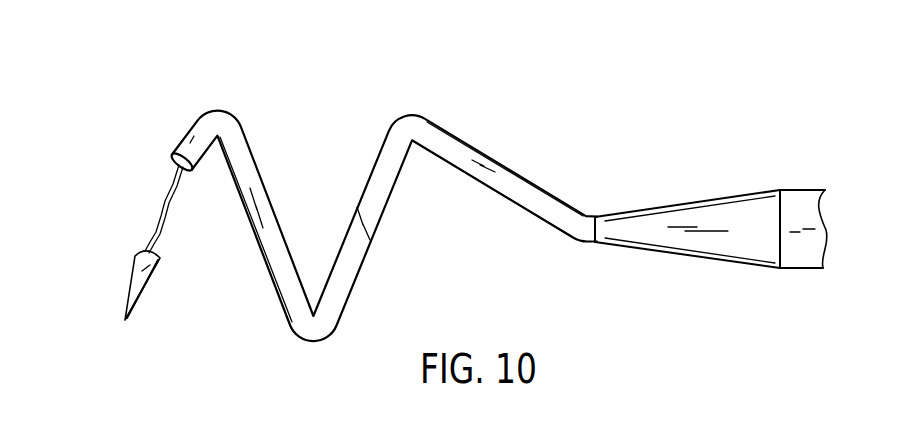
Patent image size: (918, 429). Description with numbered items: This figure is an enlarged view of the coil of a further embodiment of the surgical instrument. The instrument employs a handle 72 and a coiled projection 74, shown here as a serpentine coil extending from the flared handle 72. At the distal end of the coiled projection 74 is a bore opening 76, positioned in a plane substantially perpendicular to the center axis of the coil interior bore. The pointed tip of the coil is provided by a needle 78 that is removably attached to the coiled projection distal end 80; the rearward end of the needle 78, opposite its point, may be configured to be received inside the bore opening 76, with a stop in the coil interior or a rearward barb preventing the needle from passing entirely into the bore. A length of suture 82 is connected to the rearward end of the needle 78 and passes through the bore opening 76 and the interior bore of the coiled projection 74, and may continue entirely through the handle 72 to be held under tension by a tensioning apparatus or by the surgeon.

The handle 72 is at (792, 210).
The coiled projection 74 is at (398, 133).
The bore opening 76 is at (163, 167).
The needle 78 is at (130, 275).
The coiled projection distal end 80 is at (192, 127).
The length of suture 82 is at (170, 220).